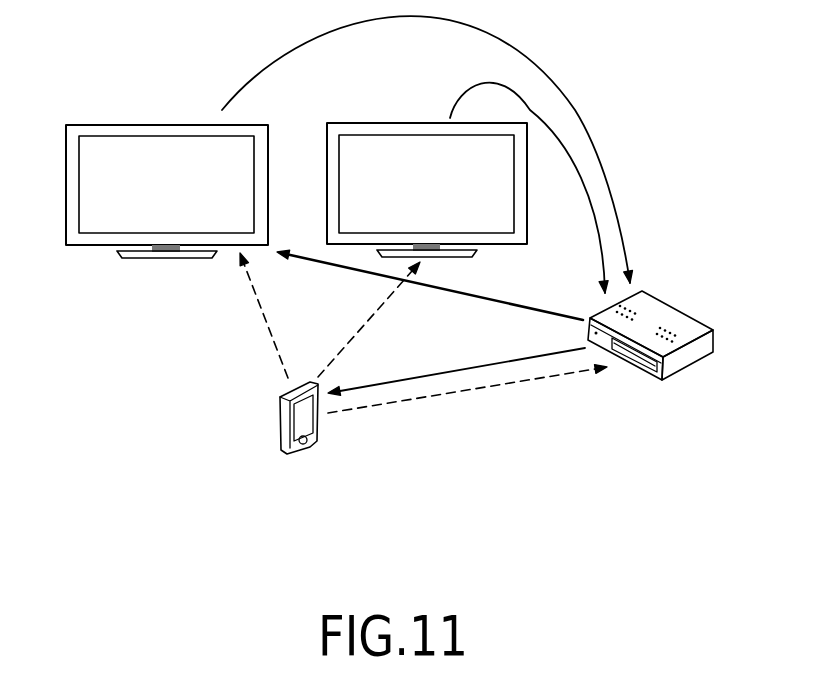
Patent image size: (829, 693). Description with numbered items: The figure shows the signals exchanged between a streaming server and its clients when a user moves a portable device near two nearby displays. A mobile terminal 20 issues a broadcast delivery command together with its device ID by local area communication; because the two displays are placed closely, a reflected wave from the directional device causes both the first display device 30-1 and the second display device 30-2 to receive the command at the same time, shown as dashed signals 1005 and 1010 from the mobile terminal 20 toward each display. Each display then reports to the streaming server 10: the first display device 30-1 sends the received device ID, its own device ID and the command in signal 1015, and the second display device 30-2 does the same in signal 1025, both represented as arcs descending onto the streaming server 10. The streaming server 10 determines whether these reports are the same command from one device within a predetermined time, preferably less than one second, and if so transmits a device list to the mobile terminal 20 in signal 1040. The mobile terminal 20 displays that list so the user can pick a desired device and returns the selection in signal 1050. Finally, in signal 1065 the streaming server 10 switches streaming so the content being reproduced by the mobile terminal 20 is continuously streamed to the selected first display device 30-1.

The streaming server 10 is at (672, 306).
The mobile terminal 20 is at (279, 425).
The first display device 30-1 is at (163, 125).
The second display device 30-2 is at (423, 123).
The step of receiving the broadcast delivery command at the first display device 1005 is at (260, 302).
The step of receiving the broadcast delivery command at the second display device 1010 is at (370, 318).
The step of transmitting information from the first display device to the streaming 1015 is at (548, 84).
The step of transmitting information from the second display device to the streaming 1025 is at (582, 144).
The step of transmitting a device list to the mobile terminal 1040 is at (478, 364).
The step of transmitting selected device information to the streaming server 1050 is at (512, 382).
The step of streaming content to the first display device 1065 is at (510, 303).